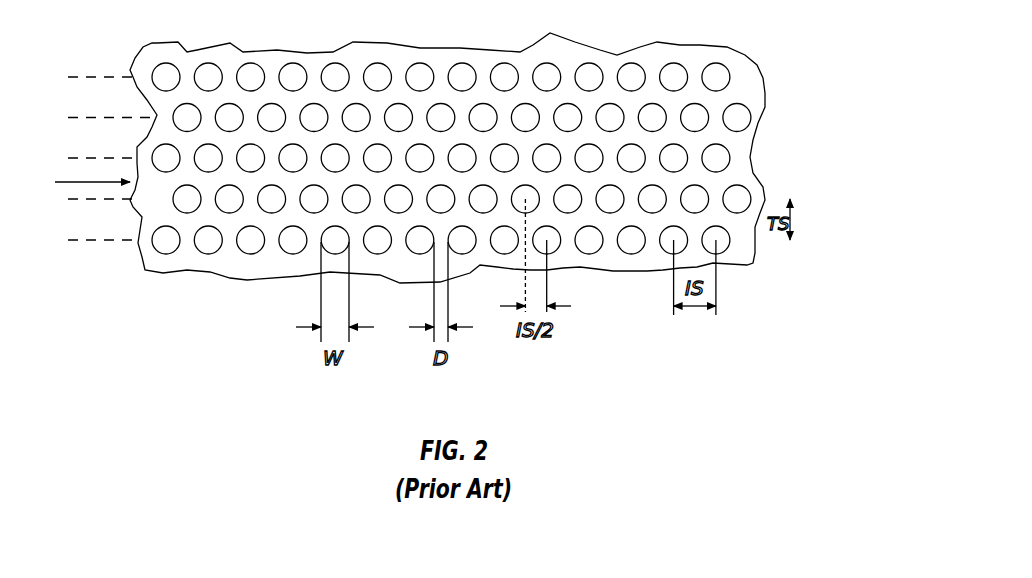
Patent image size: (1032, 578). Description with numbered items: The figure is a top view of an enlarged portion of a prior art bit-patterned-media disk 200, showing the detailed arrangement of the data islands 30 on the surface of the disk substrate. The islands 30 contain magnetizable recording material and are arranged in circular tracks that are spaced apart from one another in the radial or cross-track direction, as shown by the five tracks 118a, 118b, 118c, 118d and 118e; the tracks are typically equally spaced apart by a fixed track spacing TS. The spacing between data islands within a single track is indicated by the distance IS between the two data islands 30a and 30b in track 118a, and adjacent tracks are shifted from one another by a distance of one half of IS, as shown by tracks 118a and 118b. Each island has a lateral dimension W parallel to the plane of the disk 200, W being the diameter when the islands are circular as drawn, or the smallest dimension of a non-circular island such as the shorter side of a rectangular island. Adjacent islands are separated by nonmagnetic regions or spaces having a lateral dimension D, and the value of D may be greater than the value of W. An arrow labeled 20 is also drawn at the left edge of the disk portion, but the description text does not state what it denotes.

The flow direction 20 is at (77, 181).
The data islands 30 is at (334, 63).
The data island 30a is at (667, 242).
The data island 30b is at (720, 243).
The disk 200 is at (247, 280).
The track 118a is at (475, 257).
The track 118b is at (765, 199).
The track 118c is at (765, 158).
The track 118d is at (765, 118).
The track 118e is at (475, 52).